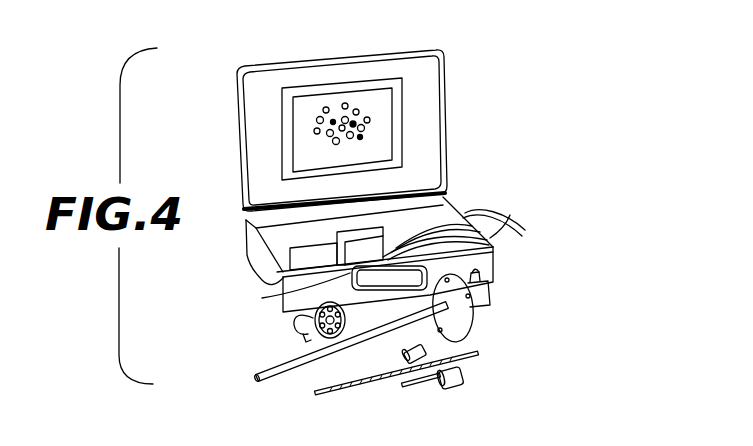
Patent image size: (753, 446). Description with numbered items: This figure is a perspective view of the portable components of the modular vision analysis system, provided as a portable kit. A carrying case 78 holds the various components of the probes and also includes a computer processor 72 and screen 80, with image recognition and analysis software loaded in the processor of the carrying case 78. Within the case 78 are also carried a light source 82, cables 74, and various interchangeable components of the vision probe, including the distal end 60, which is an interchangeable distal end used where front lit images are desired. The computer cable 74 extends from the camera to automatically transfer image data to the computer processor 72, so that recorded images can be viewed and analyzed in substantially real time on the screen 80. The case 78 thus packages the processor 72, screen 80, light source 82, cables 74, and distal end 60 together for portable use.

The distal end 60 is at (277, 372).
The computer processor 72 is at (450, 70).
The computer cable 74 is at (497, 210).
The carrying case 78 is at (497, 278).
The screen 80 is at (330, 98).
The light source 82 is at (272, 302).